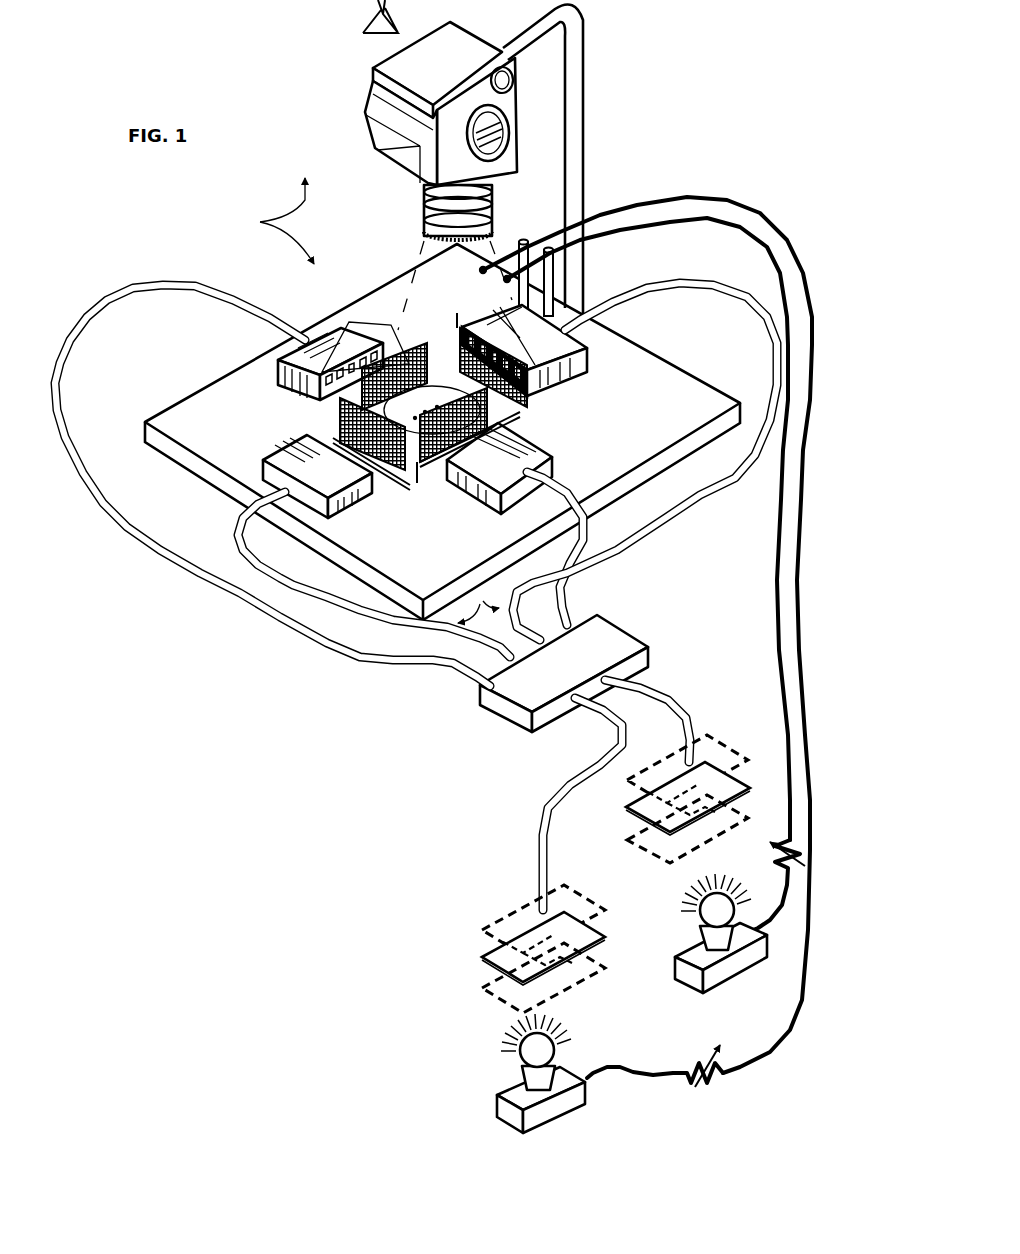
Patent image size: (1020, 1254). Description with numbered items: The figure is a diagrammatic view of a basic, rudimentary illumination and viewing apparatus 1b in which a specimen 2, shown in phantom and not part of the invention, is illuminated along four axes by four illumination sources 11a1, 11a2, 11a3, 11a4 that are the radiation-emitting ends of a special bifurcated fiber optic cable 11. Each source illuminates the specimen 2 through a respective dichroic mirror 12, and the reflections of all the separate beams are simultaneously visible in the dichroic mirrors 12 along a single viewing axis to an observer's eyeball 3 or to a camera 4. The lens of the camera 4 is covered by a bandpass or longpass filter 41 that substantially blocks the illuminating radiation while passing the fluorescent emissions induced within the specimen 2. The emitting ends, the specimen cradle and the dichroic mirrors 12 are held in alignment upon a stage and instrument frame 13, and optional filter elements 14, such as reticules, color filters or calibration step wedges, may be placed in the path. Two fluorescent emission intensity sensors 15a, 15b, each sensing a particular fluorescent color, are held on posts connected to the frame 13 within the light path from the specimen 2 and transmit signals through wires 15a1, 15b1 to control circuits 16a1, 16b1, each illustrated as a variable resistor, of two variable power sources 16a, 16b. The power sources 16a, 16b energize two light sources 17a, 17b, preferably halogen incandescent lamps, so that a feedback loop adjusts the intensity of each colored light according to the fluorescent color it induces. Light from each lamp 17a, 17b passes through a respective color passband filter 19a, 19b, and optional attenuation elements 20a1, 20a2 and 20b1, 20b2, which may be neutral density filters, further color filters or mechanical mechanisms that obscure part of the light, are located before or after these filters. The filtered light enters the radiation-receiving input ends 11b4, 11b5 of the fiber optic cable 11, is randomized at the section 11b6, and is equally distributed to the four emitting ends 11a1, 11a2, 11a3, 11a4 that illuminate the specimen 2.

The inspection apparatus 1b is at (274, 221).
The specimen 2 is at (445, 398).
The observer's eyeball 3 is at (368, 17).
The camera 4 is at (447, 68).
The bandpass or longpass filter 41 is at (495, 231).
The bifurcated fiber optic cable 11 is at (478, 605).
The illumination source 11a1 is at (288, 388).
The illumination source 11a2 is at (363, 493).
The illumination source 11a3 is at (467, 490).
The illumination source 11a4 is at (587, 372).
The radiation-receiving input end 11b4 is at (664, 697).
The radiation-receiving input end 11b5 is at (622, 733).
The randomizing section 11b6 is at (618, 627).
The dichroic mirror 12 is at (400, 318).
The stage and instrument frame 13 is at (661, 435).
The optional filter element 14 is at (417, 472).
The fluorescent emission intensity sensor 15a is at (480, 270).
The fluorescent emission intensity sensor 15b is at (506, 281).
The wire 15a1 is at (778, 218).
The wire 15b1 is at (761, 245).
The variable power source 16a is at (552, 1108).
The variable power source 16b is at (733, 966).
The control circuit 16a1 is at (693, 1062).
The control circuit 16b1 is at (774, 861).
The light source 17a is at (555, 1053).
The light source 17b is at (735, 913).
The color passband filter 19a is at (482, 958).
The color passband filter 19b is at (627, 813).
The attenuation element 20a1 is at (482, 930).
The attenuation element 20a2 is at (482, 990).
The attenuation element 20b1 is at (628, 796).
The attenuation element 20b2 is at (627, 849).